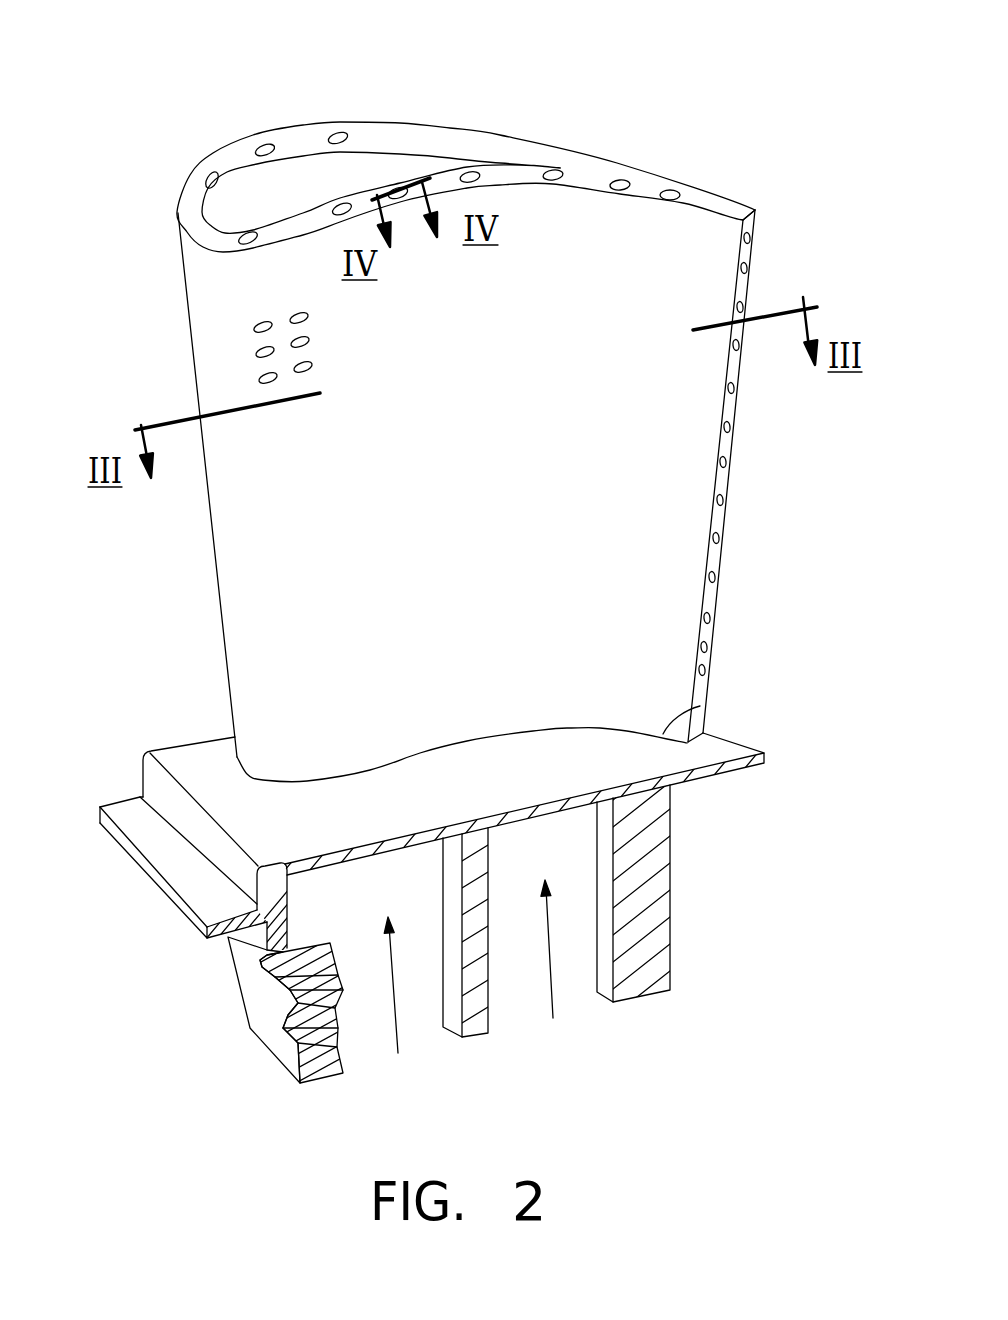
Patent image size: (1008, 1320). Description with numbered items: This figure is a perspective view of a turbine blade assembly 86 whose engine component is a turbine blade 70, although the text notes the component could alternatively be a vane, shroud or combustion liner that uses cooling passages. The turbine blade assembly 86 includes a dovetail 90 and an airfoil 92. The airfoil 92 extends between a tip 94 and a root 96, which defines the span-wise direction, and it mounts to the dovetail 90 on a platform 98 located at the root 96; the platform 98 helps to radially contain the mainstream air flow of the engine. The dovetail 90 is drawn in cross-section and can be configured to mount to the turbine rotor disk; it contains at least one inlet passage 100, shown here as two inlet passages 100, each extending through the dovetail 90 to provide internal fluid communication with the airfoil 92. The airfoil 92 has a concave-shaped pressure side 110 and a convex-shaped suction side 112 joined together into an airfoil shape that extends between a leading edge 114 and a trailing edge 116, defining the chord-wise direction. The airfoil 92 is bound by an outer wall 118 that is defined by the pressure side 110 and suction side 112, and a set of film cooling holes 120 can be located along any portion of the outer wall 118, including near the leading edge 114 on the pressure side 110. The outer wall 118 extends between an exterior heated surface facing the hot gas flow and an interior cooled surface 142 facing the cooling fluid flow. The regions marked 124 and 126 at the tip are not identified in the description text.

The turbine blade 70 is at (265, 507).
The turbine blade assembly 86 is at (755, 46).
The dovetail 90 is at (262, 1000).
The airfoil 92 is at (303, 112).
The tip 94 is at (252, 187).
The root 96 is at (700, 706).
The platform 98 is at (190, 752).
The inlet passage 100 is at (423, 1058).
The pressure side 110 is at (273, 248).
The suction side 112 is at (497, 128).
The leading edge 114 is at (193, 240).
The trailing edge 116 is at (755, 220).
The outer wall 118 is at (491, 537).
The film cooling holes 120 is at (247, 317).
The tip pocket 124 is at (300, 211).
The tip cooling holes 126 is at (346, 205).
The cooled surface 142 is at (790, 500).